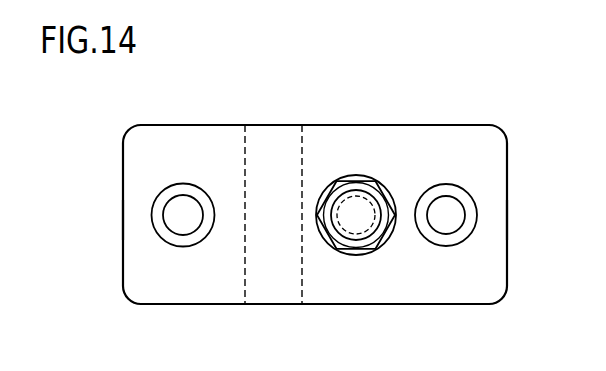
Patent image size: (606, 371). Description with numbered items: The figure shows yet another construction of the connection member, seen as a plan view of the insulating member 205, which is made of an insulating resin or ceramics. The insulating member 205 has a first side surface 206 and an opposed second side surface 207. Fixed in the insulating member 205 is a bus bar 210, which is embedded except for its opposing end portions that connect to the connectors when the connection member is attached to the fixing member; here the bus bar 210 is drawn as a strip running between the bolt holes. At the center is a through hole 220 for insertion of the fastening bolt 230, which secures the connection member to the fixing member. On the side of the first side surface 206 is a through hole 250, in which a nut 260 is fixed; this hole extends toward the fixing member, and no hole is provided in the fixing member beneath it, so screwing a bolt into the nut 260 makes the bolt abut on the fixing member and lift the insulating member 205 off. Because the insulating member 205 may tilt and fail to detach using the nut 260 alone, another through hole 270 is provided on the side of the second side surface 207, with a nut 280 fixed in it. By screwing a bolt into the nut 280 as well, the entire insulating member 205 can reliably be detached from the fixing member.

The insulating member 205 is at (473, 147).
The first side surface 206 is at (123, 268).
The second side surface 207 is at (507, 268).
The bus bar 210 is at (273, 155).
The through hole 220 is at (356, 222).
The fastening bolt 230 is at (360, 182).
The through hole 250 is at (157, 192).
The nut 260 is at (163, 216).
The through hole 270 is at (470, 195).
The nut 280 is at (472, 217).